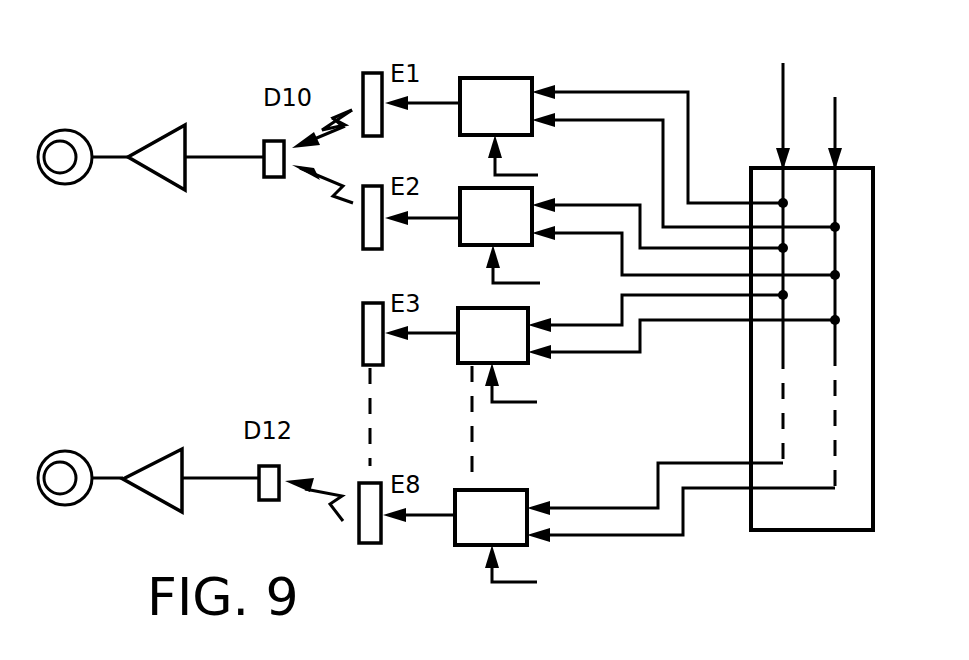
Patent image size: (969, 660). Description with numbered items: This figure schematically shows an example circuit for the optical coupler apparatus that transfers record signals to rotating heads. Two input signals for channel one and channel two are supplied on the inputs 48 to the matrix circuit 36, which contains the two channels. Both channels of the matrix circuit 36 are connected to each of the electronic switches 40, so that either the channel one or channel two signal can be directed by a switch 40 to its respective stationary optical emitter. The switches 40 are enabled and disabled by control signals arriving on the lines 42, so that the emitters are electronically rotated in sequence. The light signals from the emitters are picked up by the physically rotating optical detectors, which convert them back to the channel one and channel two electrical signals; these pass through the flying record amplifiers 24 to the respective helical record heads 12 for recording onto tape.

The helical record heads 12 is at (60, 130).
The flying record amplifiers 24 is at (161, 137).
The matrix circuit 36 is at (815, 520).
The electronic switches 40 is at (516, 52).
The control signal lines 42 is at (538, 175).
The input lines 48 is at (833, 125).